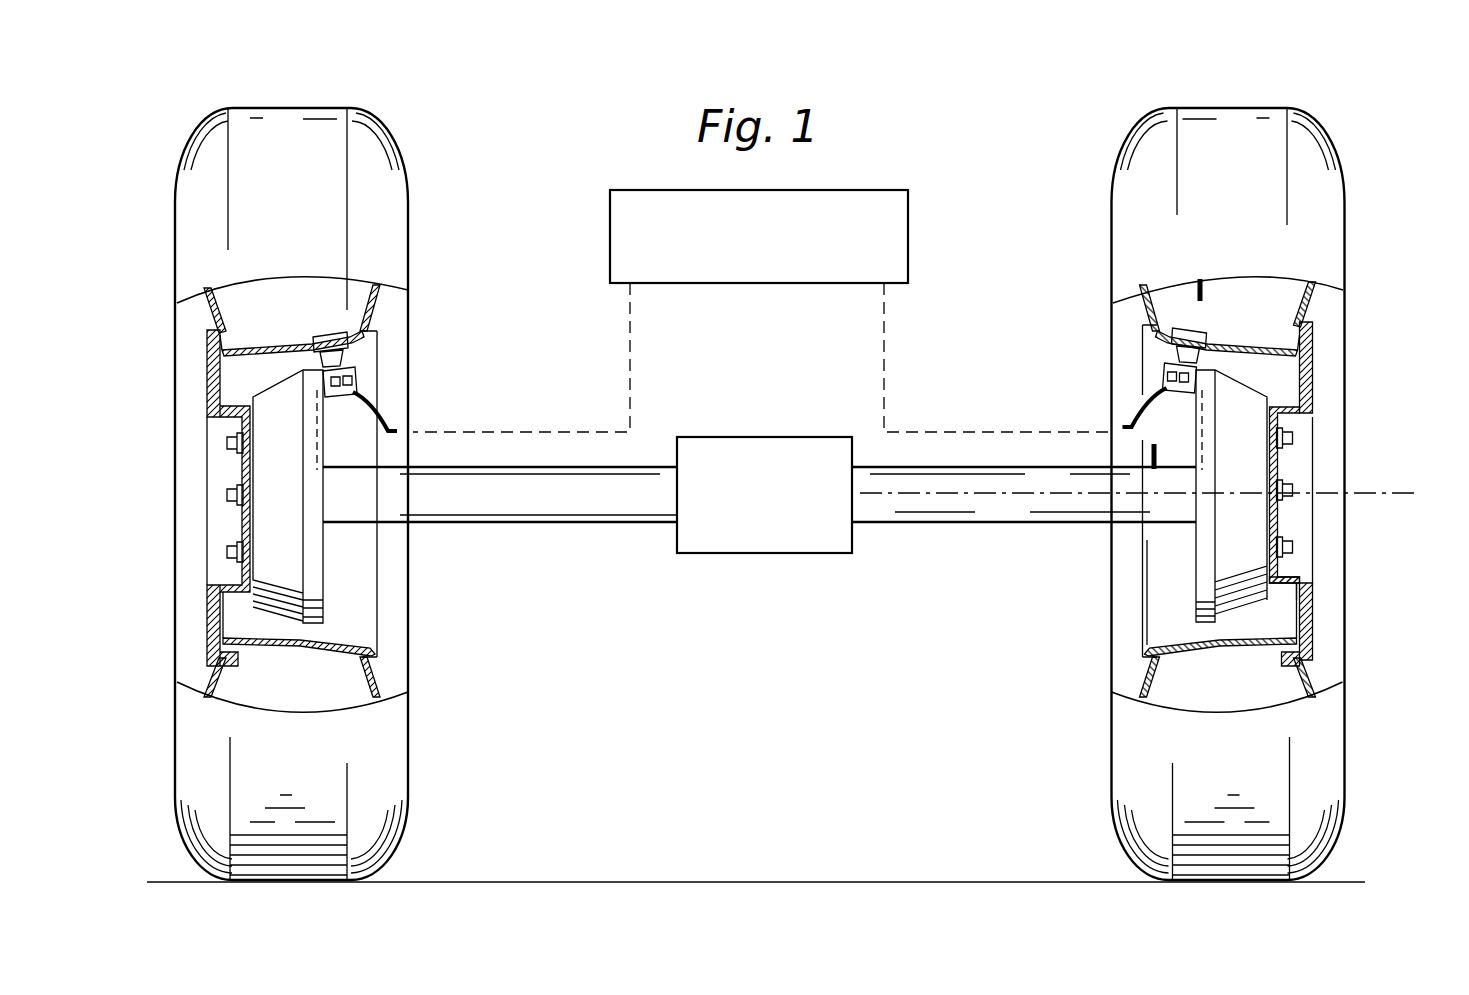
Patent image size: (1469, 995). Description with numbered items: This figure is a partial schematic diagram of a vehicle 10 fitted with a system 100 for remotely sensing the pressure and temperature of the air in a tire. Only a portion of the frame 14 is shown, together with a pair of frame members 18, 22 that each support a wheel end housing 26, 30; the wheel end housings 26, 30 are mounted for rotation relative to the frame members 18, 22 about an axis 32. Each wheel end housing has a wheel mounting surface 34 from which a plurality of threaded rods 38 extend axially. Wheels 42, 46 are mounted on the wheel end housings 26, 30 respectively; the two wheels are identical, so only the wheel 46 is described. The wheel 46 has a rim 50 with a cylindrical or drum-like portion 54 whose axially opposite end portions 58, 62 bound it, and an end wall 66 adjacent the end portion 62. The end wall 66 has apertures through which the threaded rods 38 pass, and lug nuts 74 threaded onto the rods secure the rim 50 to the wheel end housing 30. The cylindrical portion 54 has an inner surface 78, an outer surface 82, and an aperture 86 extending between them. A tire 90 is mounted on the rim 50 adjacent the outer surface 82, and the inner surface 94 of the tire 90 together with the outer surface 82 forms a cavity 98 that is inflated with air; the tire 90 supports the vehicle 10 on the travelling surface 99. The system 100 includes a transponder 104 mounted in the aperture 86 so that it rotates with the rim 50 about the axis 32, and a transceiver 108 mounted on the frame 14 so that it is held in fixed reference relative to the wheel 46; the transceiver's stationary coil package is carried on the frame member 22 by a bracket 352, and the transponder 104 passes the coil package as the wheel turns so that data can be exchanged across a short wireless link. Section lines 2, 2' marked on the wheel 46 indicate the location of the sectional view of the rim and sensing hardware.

The vehicle 10 is at (960, 122).
The frame 14 is at (742, 530).
The frame member 18 is at (577, 507).
The frame member 22 is at (938, 493).
The wheel end housing 26 is at (327, 566).
The wheel end housing 30 is at (1190, 570).
The axis 32 is at (1412, 498).
The wheel mounting surface 34 is at (1283, 630).
The threaded rods 38 is at (1293, 440).
The wheel 42 is at (375, 696).
The wheel 46 is at (1110, 691).
The rim 50 is at (1316, 366).
The cylindrical portion 54 is at (1237, 650).
The end portion 58 is at (1145, 657).
The end portion 62 is at (1307, 672).
The end wall 66 is at (1280, 598).
The lug nuts 74 is at (1280, 470).
The inner surface 78 is at (1173, 647).
The outer surface 82 is at (1168, 655).
The aperture 86 is at (1193, 331).
The tire 90 is at (1343, 748).
The inner surface 94 is at (1342, 295).
The cavity 98 is at (1239, 292).
The travelling surface 99 is at (930, 880).
The system 100 is at (950, 272).
The transponder 104 is at (1173, 350).
The transceiver 108 is at (830, 202).
The bracket 352 is at (1188, 445).
The section line 2 is at (1112, 449).
The section line 2' is at (1135, 275).